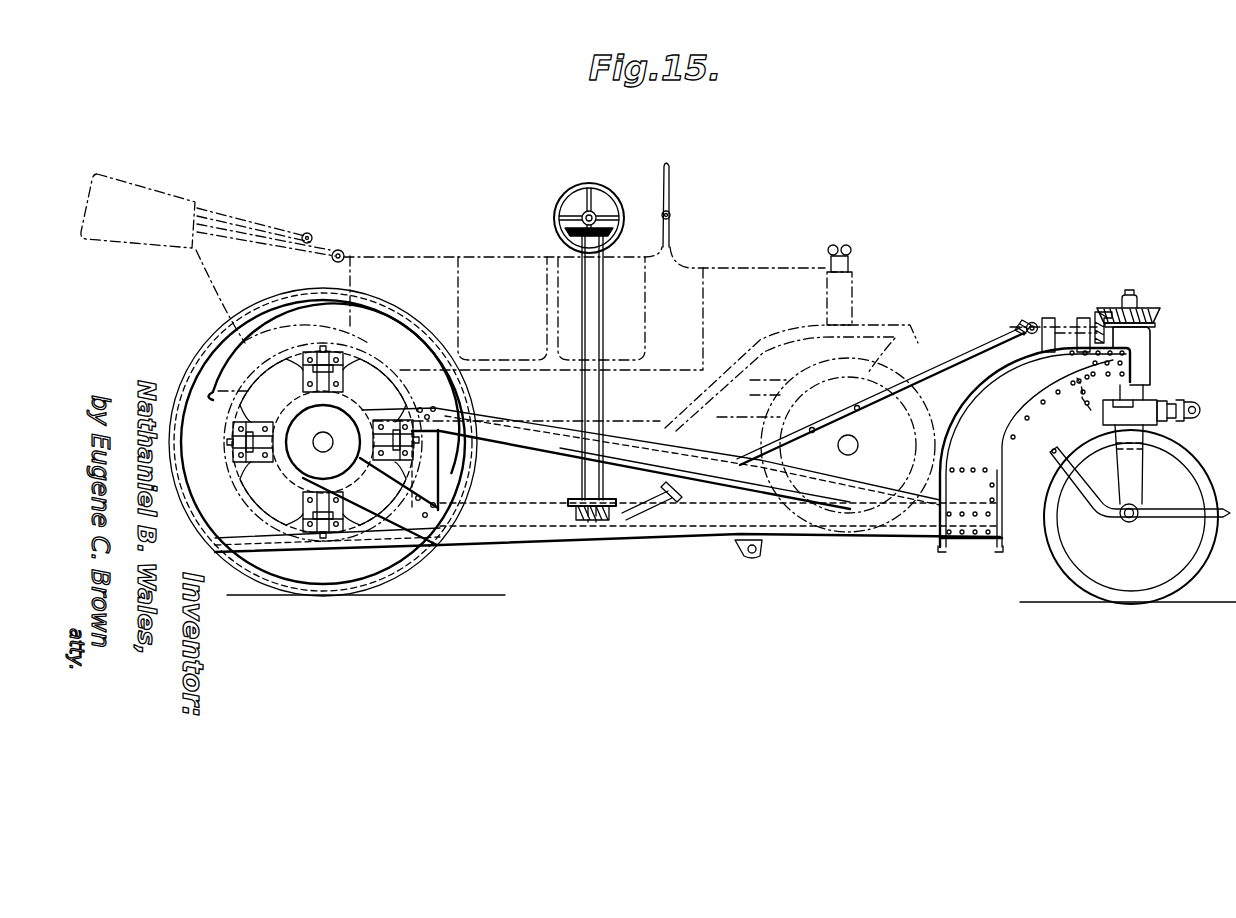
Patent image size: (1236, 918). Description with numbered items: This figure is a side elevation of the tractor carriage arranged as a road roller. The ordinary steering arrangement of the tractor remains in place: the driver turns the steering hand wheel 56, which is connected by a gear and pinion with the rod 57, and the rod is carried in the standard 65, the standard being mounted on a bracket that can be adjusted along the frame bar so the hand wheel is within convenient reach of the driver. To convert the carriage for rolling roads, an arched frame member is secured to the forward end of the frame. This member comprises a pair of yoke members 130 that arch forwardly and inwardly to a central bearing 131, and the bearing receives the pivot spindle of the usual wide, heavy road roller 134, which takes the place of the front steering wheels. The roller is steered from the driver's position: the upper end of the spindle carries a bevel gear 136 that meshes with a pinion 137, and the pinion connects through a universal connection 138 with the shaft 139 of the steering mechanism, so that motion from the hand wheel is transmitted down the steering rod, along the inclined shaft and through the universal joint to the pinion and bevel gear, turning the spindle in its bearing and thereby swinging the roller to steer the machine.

The steering hand wheel 56 is at (562, 198).
The rod 57 is at (583, 393).
The standard 65 is at (603, 380).
The yoke members 130 is at (1034, 450).
The central bearing 131 is at (1137, 353).
The road roller 134 is at (1191, 462).
The bevel gear 136 is at (1160, 317).
The pinion 137 is at (1097, 313).
The universal connection 138 is at (1032, 322).
The shaft 139 is at (979, 351).